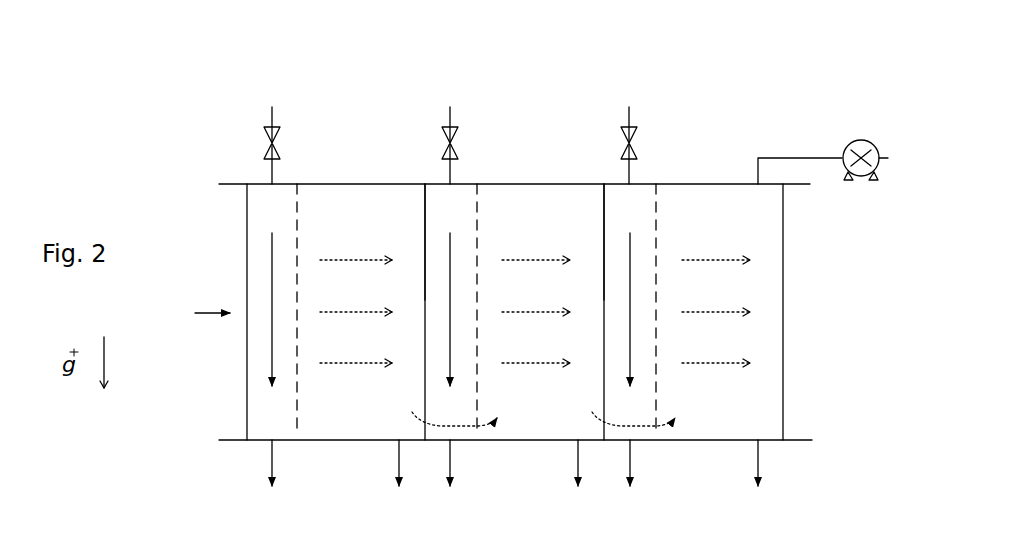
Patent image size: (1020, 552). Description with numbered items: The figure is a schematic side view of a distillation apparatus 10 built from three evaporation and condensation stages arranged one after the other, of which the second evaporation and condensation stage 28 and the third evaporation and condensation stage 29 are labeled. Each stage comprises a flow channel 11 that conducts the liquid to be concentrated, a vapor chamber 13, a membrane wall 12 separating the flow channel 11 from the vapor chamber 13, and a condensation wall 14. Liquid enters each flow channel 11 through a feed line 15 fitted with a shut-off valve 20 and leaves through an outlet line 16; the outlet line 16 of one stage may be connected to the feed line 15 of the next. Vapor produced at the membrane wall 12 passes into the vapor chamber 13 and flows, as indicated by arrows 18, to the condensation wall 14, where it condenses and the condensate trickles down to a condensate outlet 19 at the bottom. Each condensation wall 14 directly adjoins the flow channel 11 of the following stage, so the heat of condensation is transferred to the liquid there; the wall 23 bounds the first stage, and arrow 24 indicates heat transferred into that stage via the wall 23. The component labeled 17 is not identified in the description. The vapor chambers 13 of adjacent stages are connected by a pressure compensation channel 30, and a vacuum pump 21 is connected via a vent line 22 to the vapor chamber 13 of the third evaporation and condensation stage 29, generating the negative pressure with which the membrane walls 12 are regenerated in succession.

The distillation apparatus 10 is at (398, 50).
The flow channel 11 is at (270, 268).
The membrane wall 12 is at (298, 268).
The vapor chamber 13 is at (347, 222).
The condensation wall 14 is at (784, 310).
The feed line 15 is at (266, 121).
The outlet line 16 is at (277, 452).
The partition wall 17 is at (424, 352).
The arrows 18 is at (361, 365).
The condensate outlet 19 is at (396, 456).
The shut-off valve 20 is at (275, 143).
The vacuum pump 21 is at (861, 180).
The vent line 22 is at (784, 156).
The wall 23 is at (245, 366).
The arrow 24 is at (197, 318).
The second evaporation and condensation stage 28 is at (513, 183).
The third evaporation and condensation stage 29 is at (695, 183).
The pressure compensation channel 30 is at (437, 426).